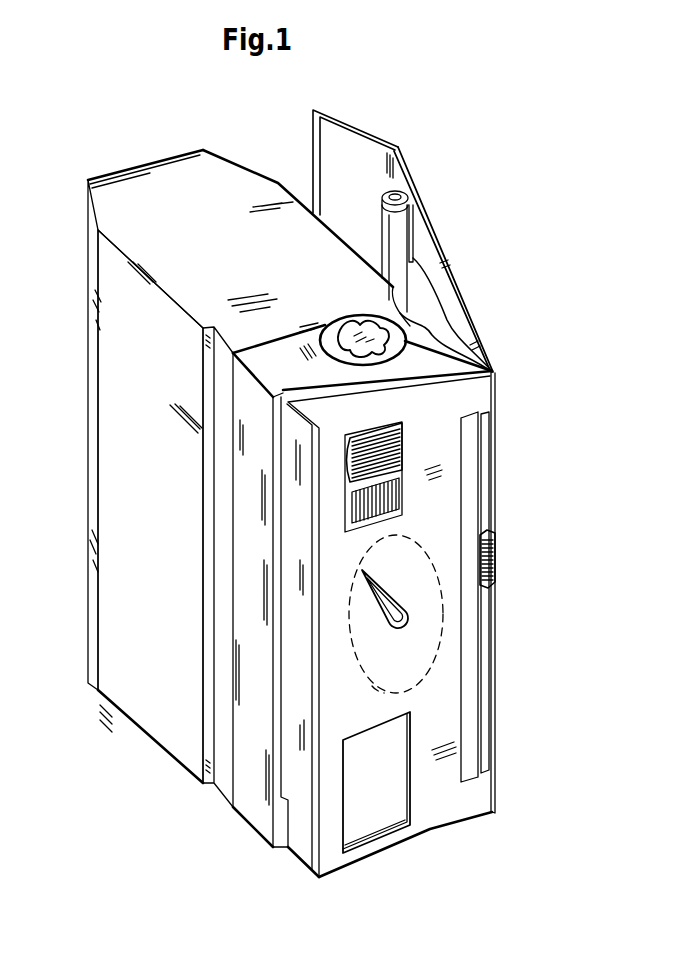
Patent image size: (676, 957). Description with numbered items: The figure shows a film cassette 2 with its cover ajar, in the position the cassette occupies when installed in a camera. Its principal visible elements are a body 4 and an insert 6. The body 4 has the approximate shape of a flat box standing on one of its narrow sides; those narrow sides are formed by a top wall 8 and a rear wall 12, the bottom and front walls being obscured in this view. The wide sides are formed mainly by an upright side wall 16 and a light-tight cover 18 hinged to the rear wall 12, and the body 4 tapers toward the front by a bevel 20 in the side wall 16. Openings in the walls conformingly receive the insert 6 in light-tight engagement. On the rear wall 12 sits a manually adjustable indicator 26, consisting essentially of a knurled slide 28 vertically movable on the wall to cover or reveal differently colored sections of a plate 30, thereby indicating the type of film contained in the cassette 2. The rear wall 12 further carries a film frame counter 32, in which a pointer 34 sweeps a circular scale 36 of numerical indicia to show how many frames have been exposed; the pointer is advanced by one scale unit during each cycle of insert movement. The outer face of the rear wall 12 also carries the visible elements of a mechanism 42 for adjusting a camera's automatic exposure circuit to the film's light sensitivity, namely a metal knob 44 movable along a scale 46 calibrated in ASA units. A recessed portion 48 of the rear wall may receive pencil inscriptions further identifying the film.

The film cassette 2 is at (219, 458).
The body 4 is at (128, 170).
The insert 6 is at (388, 508).
The top wall 8 is at (222, 173).
The rear wall 12 is at (431, 629).
The side wall 16 is at (113, 596).
The light-tight cover 18 is at (428, 236).
The bevel 20 is at (95, 397).
The manually adjustable indicator 26 is at (405, 475).
The knurled slide 28 is at (375, 433).
The plate 30 is at (397, 497).
The film frame counter 32 is at (438, 673).
The pointer 34 is at (384, 592).
The circular scale 36 is at (372, 686).
The mechanism for adjusting the automatic exposure circuit 42 is at (480, 627).
The metal knob 44 is at (497, 555).
The scale 46 is at (468, 717).
The recessed portion 48 is at (357, 840).